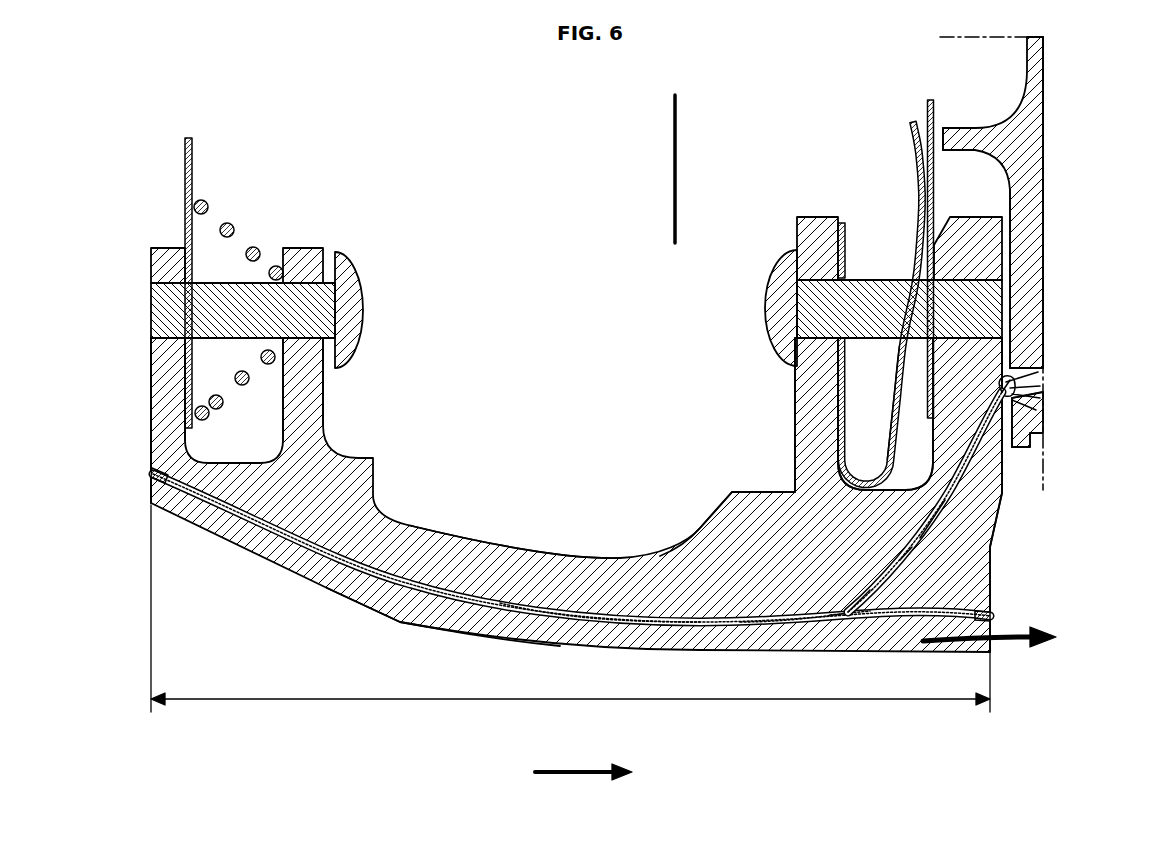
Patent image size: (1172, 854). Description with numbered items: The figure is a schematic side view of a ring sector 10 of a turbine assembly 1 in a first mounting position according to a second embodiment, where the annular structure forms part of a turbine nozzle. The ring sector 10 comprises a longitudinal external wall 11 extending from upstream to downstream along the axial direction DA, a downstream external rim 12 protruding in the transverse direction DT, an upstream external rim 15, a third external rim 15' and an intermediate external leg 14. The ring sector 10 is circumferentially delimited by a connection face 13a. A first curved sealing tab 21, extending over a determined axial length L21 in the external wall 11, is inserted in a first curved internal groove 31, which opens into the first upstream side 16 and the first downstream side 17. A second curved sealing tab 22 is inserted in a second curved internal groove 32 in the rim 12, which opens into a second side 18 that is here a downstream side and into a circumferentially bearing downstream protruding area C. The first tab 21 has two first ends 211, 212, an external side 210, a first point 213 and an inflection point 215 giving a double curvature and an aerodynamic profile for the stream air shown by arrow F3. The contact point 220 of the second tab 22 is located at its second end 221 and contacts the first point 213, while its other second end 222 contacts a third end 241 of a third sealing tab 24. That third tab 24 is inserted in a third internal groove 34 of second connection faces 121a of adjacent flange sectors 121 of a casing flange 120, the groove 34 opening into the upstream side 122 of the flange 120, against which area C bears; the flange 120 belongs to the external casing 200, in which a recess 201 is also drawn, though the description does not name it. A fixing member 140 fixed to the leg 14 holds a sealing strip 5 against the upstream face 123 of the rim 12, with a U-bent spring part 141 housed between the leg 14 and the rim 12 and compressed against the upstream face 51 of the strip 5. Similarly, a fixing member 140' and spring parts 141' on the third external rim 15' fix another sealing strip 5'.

The turbine assembly 1 is at (580, 350).
The sealing strip 5 is at (950, 230).
The sealing strip 5' is at (163, 283).
The ring sector 10 is at (345, 505).
The longitudinal external wall 11 is at (458, 548).
The downstream external rim 12 is at (975, 235).
The connection face 13a is at (702, 530).
The intermediate external leg 14 is at (812, 406).
The upstream external rim 15 is at (140, 399).
The third external rim 15' is at (331, 389).
The first upstream side 16 is at (152, 492).
The first downstream side 17 is at (995, 530).
The second side of the rim 18 is at (1020, 368).
The first curved sealing tab 21 is at (697, 628).
The second curved sealing tab 22 is at (913, 540).
The third sealing tab 24 is at (1036, 396).
The first curved internal groove 31 is at (415, 598).
The second curved internal groove 32 is at (927, 537).
The third internal groove 34 is at (1038, 405).
The upstream face of the sealing strip 51 is at (916, 121).
The casing flange 120 is at (1043, 250).
The flange sector 121 is at (1044, 78).
The second connection face 121a is at (1028, 445).
The upstream side of the casing flange 122 is at (1012, 300).
The upstream face of the rim 123 is at (928, 440).
The fixing member 140 is at (883, 291).
The fixing member 140' is at (257, 303).
The spring part 141 is at (871, 402).
The spring part 141' is at (238, 291).
The external casing 200 is at (1028, 144).
The slot 201 is at (962, 135).
The external side of the first sealing tab 210 is at (590, 612).
The first end of the first sealing tab 211 is at (157, 468).
The first end of the first sealing tab 212 is at (993, 620).
The first point 213 is at (850, 618).
The inflection point 215 is at (782, 620).
The contact point 220 is at (732, 540).
The second end of the second sealing tab 221 is at (850, 612).
The second end of the second sealing tab 222 is at (1030, 385).
The third end of the third sealing tab 241 is at (1040, 440).
The circumferentially bearing downstream protruding area C is at (1014, 432).
The transverse direction DT is at (676, 170).
The axial direction DA is at (590, 778).
The stream air arrow F3 is at (1005, 640).
The determined axial length L21 is at (578, 702).